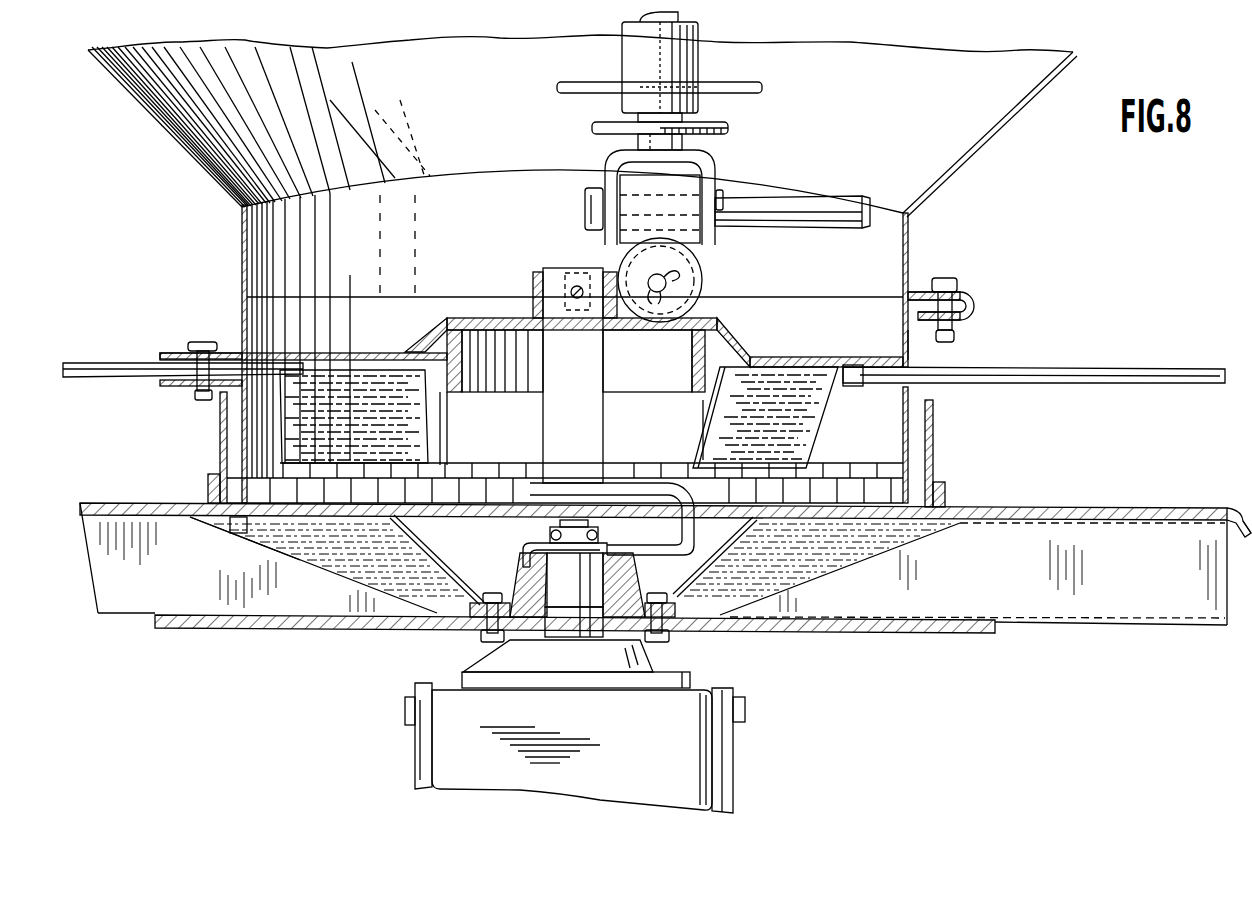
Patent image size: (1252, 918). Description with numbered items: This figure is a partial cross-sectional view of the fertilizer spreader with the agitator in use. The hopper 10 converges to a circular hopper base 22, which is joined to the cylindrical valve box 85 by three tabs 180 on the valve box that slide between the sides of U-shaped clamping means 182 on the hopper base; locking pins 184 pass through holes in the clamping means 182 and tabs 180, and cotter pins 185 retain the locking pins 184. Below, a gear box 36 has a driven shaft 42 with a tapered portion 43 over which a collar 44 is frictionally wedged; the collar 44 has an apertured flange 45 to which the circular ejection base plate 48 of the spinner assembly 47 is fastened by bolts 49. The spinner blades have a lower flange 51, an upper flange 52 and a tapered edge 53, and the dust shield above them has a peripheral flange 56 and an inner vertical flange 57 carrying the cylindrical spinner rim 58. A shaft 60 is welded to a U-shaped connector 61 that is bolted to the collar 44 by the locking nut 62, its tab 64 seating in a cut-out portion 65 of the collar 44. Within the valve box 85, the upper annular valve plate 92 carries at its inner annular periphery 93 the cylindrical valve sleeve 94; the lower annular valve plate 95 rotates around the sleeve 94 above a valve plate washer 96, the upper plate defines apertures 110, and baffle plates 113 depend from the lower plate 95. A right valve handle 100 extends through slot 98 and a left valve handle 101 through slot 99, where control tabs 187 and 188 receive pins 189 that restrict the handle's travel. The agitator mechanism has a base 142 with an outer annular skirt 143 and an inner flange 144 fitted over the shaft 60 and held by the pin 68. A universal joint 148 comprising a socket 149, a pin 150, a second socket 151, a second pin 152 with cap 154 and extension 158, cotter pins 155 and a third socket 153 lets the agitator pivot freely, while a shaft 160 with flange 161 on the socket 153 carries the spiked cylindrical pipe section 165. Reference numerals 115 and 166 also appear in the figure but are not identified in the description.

The hopper 10 is at (1003, 132).
The circular hopper base 22 is at (908, 228).
The gear box 36 is at (584, 720).
The driven shaft 42 is at (580, 631).
The tapered portion 43 is at (580, 591).
The collar 44 is at (625, 580).
The apertured flange 45 is at (660, 595).
The spinner or impeller assembly 47 is at (1055, 508).
The circular ejection base plate 48 is at (905, 630).
The bolts 49 is at (668, 642).
The lower flange 51 is at (1125, 622).
The upper flange 52 is at (235, 520).
The tapered edge 53 is at (835, 578).
The peripheral flange 56 is at (1240, 518).
The inner vertical flange 57 is at (945, 495).
The cylindrical spinner rim 58 is at (933, 430).
The shaft 60 is at (588, 429).
The U-shaped connector 61 is at (694, 500).
The locking nut 62 is at (550, 535).
The tab 64 is at (523, 553).
The cut-out portion 65 is at (523, 567).
The pin 68 is at (577, 286).
The cylindrical valve box 85 is at (908, 345).
The upper annular valve plate 92 is at (893, 356).
The inner annular periphery 93 is at (470, 365).
The cylindrical valve sleeve 94 is at (690, 368).
The lower annular valve plate 95 is at (810, 356).
The valve plate washer 96 is at (425, 380).
The slot 98 is at (852, 387).
The slot 99 is at (228, 350).
The right valve handle 100 is at (1130, 370).
The left valve handle 101 is at (110, 362).
The apertures 110 is at (333, 352).
The baffle plates 113 is at (800, 439).
The container wall 115 is at (700, 428).
The base 142 is at (460, 316).
The outer annular skirt 143 is at (420, 342).
The inner flange 144 is at (533, 280).
The universal joint 148 is at (585, 201).
The socket 149 is at (700, 285).
The pin 150 is at (665, 283).
The second socket 151 is at (670, 217).
The second pin 152 is at (780, 210).
The third socket 153 is at (715, 160).
The cap 154 is at (585, 218).
The cotter pins 155 is at (723, 196).
The extension 158 is at (862, 208).
The shaft 160 is at (702, 124).
The flange 161 is at (728, 134).
The cylindrical pipe section 165 is at (698, 70).
The handle rod 166 is at (762, 88).
The tabs 180 is at (974, 312).
The U-shaped clamping means 182 is at (974, 298).
The locking pins 184 is at (950, 278).
The cotter pins 185 is at (954, 335).
The control tab 187 is at (165, 353).
The control tab 188 is at (172, 386).
The pins 189 is at (203, 342).